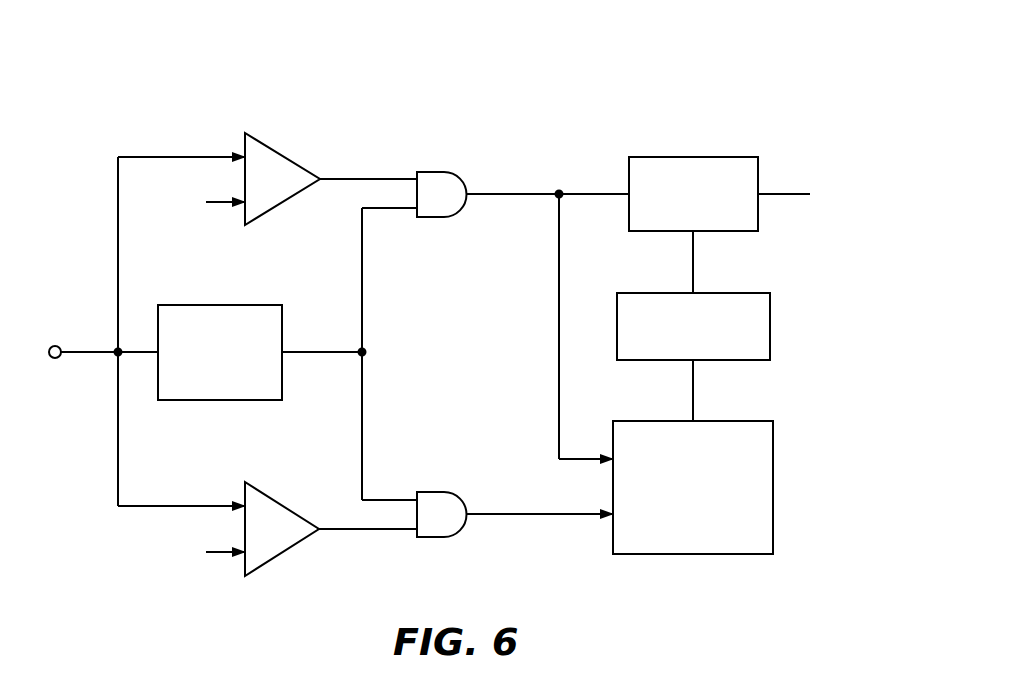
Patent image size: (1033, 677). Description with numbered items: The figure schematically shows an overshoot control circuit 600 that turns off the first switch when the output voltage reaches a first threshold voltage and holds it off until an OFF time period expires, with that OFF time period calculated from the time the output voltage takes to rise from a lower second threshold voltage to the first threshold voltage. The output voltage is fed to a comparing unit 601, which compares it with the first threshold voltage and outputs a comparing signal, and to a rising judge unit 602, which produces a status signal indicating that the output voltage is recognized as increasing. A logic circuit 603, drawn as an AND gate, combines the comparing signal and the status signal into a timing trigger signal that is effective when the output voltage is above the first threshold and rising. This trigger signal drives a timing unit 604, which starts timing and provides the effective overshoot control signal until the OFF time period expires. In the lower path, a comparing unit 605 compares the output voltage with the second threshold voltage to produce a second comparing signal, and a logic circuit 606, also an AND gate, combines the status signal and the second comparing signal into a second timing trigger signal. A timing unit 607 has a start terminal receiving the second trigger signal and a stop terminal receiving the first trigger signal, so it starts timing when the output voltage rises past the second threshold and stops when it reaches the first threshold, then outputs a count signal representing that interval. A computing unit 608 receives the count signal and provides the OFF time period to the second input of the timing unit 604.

The overshoot control circuit 600 is at (772, 56).
The comparing unit 601 is at (297, 142).
The rising judge unit 602 is at (185, 305).
The logic circuit 603 is at (438, 158).
The timing unit 604 is at (740, 157).
The comparing unit 605 is at (267, 494).
The logic circuit 606 is at (445, 478).
The timing unit 607 is at (765, 421).
The computing unit 608 is at (760, 293).